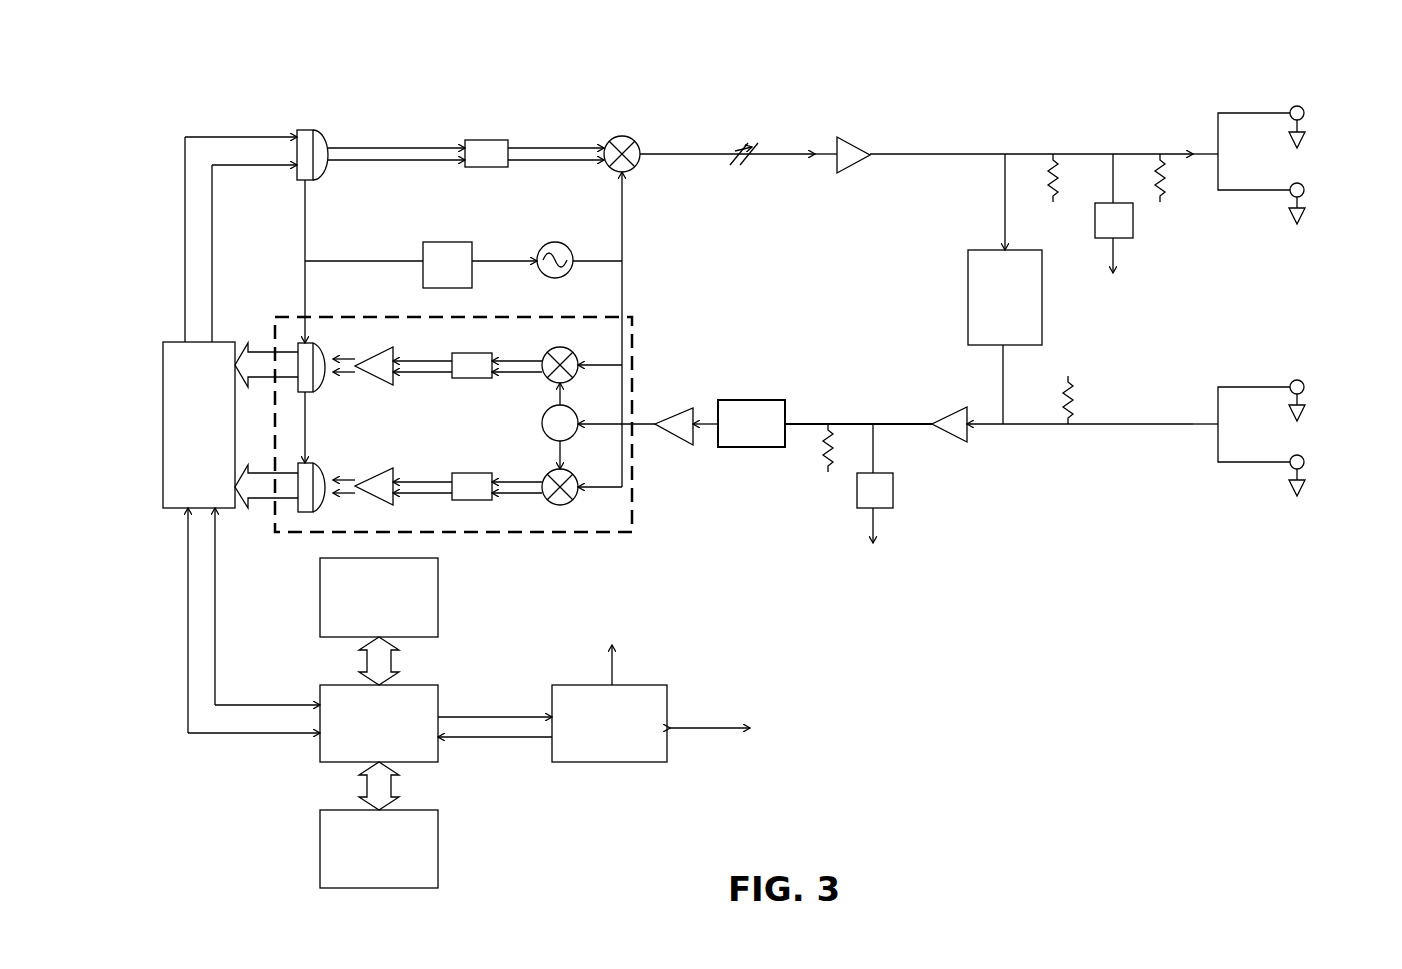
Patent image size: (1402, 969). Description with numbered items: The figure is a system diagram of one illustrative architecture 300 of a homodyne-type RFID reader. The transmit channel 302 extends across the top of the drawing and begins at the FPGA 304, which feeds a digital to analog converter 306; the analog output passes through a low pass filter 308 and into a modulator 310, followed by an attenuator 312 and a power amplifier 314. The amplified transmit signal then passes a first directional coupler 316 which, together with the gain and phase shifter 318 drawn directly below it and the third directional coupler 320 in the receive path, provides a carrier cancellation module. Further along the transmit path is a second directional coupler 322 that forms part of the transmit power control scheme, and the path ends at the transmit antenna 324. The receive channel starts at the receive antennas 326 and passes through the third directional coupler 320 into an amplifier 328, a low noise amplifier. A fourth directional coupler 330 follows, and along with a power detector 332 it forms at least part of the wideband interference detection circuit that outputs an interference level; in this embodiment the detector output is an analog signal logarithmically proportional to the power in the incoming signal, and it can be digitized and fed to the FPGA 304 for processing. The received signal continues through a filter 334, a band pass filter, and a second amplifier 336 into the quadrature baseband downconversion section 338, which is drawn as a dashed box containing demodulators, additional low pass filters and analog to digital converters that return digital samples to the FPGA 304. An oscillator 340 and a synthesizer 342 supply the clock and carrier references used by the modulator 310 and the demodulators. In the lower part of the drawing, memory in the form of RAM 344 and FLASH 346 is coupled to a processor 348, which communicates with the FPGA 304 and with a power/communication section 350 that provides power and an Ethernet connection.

The architecture 300 is at (940, 92).
The transmit channel 302 is at (677, 132).
The FPGA 304 is at (163, 418).
The digital to analog converter 306 is at (328, 135).
The low pass filter 308 is at (487, 140).
The modulator 310 is at (637, 162).
The attenuator 312 is at (740, 185).
The power amplifier 314 is at (850, 140).
The first directional coupler 316 is at (1015, 122).
The gain and phase shifter 318 is at (968, 283).
The third directional coupler 320 is at (1037, 460).
The second directional coupler 322 is at (1130, 122).
The transmit antenna 324 is at (1305, 113).
The receive antennas 326 is at (1305, 387).
The amplifier 328 is at (953, 408).
The fourth directional coupler 330 is at (848, 387).
The power detector 332 is at (900, 484).
The filter 334 is at (740, 400).
The second amplifier 336 is at (676, 410).
The quadrature baseband downconversion section 338 is at (632, 533).
The oscillator 340 is at (440, 242).
The synthesizer 342 is at (562, 243).
The RAM 344 is at (438, 598).
The FLASH 346 is at (438, 855).
The processor 348 is at (438, 705).
The power/communication section 350 is at (595, 762).